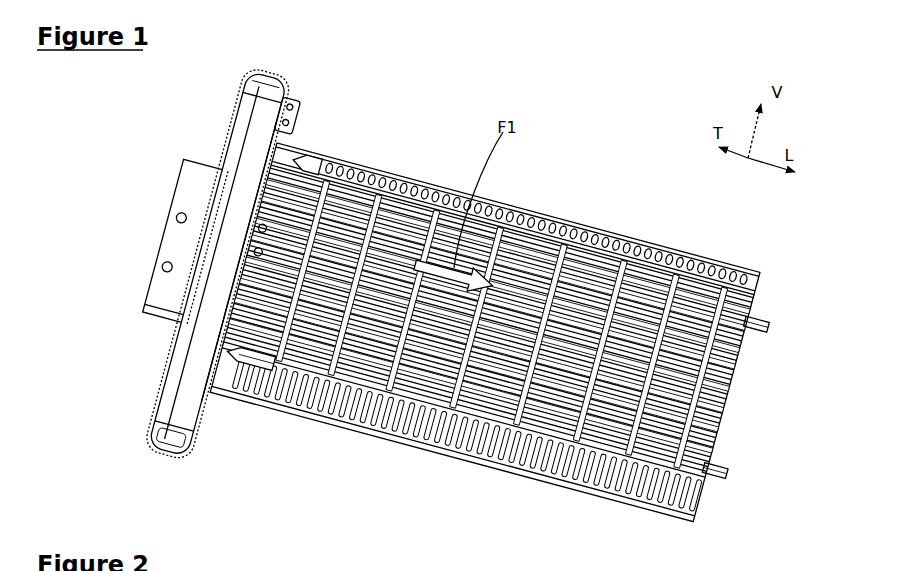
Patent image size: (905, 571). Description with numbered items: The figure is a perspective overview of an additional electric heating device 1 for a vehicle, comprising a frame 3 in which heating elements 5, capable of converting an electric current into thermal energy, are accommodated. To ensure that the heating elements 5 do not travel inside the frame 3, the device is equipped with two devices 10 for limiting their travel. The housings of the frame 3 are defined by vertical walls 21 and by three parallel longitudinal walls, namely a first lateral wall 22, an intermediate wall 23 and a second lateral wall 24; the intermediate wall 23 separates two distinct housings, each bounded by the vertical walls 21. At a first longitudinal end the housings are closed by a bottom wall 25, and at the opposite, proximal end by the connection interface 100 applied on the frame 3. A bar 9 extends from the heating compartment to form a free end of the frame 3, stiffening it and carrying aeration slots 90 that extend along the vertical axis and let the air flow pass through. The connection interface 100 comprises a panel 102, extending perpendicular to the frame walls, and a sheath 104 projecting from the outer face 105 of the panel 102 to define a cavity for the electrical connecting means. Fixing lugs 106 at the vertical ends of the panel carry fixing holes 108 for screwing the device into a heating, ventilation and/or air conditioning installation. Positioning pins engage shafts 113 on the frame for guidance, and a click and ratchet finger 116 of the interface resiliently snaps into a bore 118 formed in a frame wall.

The additional electric heating device 1 is at (549, 132).
The frame 3 is at (403, 470).
The heating elements 5 is at (523, 282).
The bar 9 is at (567, 473).
The device for limiting the travel of the heating elements 10 is at (661, 321).
The vertical walls 21 is at (350, 317).
The first lateral longitudinal wall 22 is at (503, 410).
The intermediate longitudinal wall 23 is at (628, 370).
The second lateral longitudinal wall 24 is at (500, 223).
The bottom wall 25 is at (730, 377).
The aeration slots 90 is at (630, 487).
The connection interface 100 is at (133, 365).
The panel 102 is at (243, 148).
The sheath 104 is at (181, 247).
The outer face 105 is at (167, 380).
The fixing lugs 106 is at (274, 75).
The fixing holes 108 is at (287, 97).
The shaft 113 is at (318, 146).
The click and ratchet finger 116 is at (240, 308).
The bore 118 is at (240, 308).